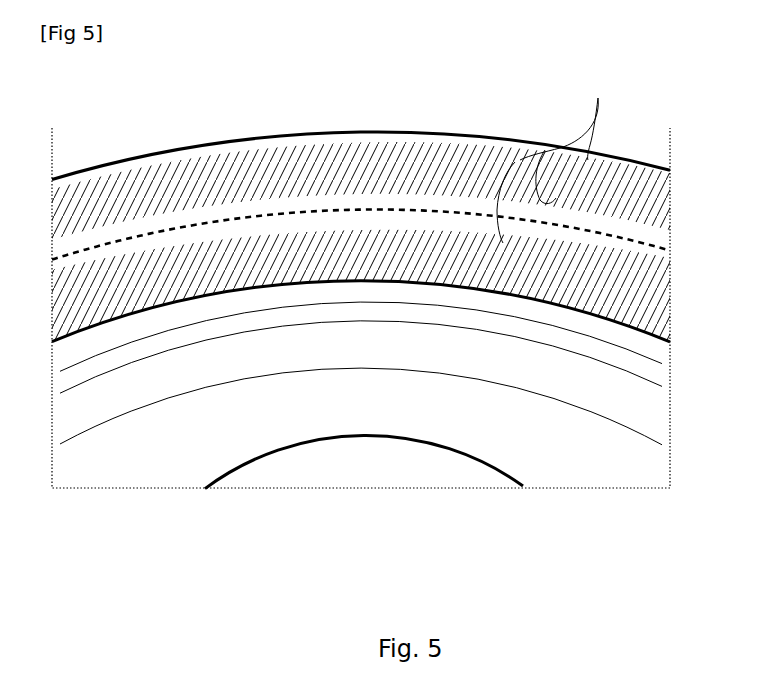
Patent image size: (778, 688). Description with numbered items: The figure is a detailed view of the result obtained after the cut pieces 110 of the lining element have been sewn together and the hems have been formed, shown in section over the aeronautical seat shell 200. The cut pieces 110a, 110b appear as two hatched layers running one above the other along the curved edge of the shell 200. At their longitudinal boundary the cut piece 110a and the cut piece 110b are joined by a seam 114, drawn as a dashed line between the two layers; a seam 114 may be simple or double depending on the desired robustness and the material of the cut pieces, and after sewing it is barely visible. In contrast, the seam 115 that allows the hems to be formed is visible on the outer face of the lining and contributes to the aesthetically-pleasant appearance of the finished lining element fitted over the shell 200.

The cut pieces 110 is at (654, 193).
The cut piece 110a is at (642, 283).
The cut piece 110b is at (196, 172).
The seam 114 is at (652, 237).
The seam 115 is at (551, 159).
The aeronautical seat shell 200 is at (640, 404).